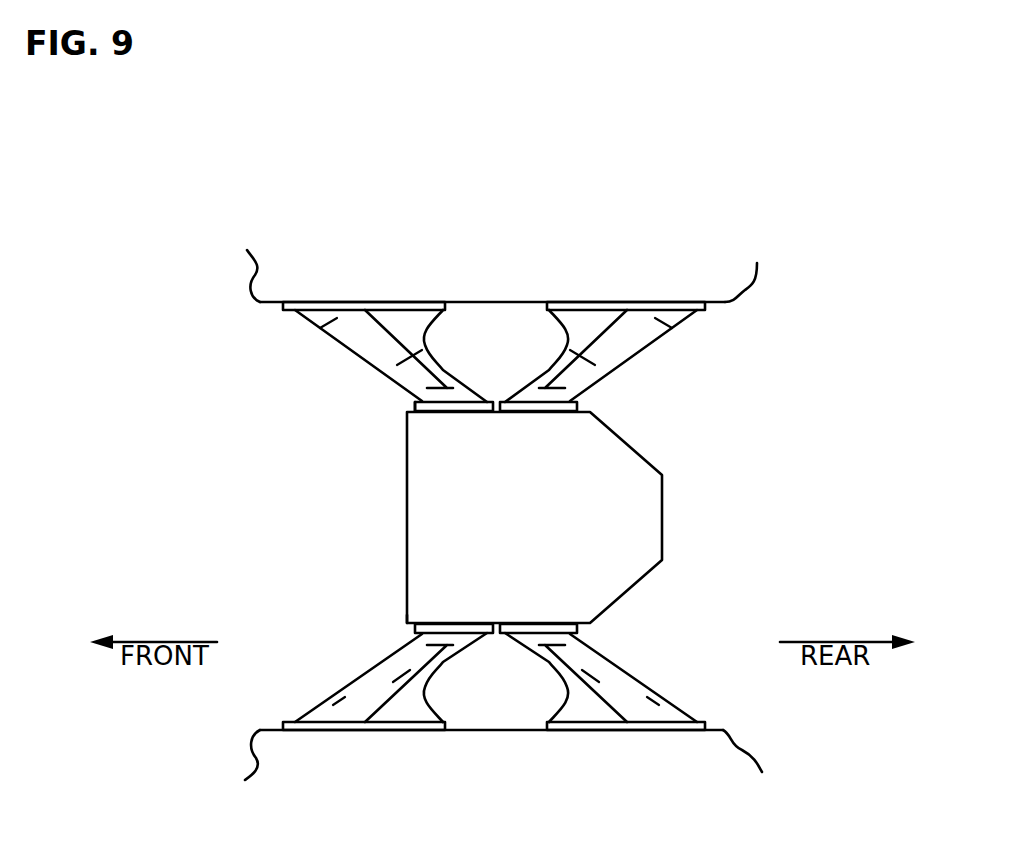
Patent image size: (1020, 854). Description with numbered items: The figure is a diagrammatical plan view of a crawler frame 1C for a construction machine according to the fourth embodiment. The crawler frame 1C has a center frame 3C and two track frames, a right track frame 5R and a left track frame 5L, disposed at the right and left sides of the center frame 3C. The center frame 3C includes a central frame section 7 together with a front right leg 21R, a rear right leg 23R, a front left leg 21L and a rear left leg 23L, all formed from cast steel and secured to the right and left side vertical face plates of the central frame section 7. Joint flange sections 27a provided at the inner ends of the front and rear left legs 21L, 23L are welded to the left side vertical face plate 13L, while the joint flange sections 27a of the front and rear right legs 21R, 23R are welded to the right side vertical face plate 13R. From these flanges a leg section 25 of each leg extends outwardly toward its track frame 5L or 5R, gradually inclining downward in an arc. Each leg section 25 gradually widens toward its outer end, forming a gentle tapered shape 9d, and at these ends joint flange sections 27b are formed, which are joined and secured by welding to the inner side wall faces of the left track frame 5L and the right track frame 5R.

The right track frame 5R is at (665, 257).
The left track frame 5L is at (722, 762).
The central frame section 7 is at (613, 497).
The joint flange sections 27a is at (462, 410).
The joint flange sections 27b is at (388, 300).
The tapered shape 9d is at (325, 326).
The leg section 25 is at (405, 367).
The front right leg 21R is at (352, 342).
The rear right leg 23R is at (568, 373).
The front left leg 21L is at (390, 665).
The rear left leg 23L is at (588, 663).
The right side vertical face plate 13R is at (413, 407).
The left side vertical face plate 13L is at (407, 622).
The crawler frame 1C is at (184, 513).
The center frame 3C is at (680, 558).